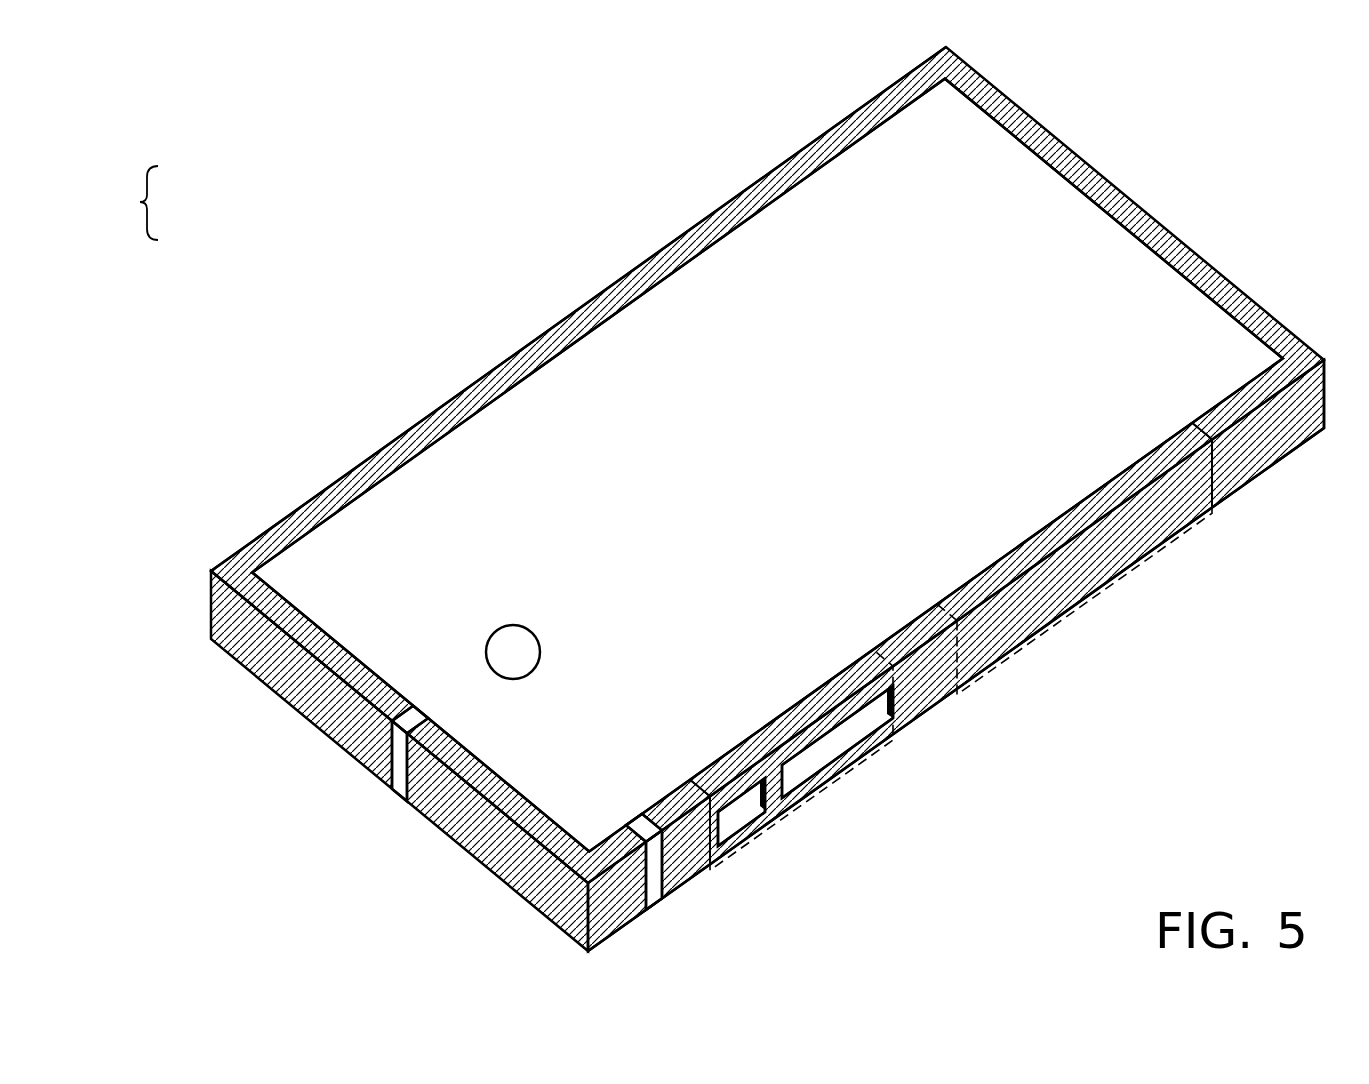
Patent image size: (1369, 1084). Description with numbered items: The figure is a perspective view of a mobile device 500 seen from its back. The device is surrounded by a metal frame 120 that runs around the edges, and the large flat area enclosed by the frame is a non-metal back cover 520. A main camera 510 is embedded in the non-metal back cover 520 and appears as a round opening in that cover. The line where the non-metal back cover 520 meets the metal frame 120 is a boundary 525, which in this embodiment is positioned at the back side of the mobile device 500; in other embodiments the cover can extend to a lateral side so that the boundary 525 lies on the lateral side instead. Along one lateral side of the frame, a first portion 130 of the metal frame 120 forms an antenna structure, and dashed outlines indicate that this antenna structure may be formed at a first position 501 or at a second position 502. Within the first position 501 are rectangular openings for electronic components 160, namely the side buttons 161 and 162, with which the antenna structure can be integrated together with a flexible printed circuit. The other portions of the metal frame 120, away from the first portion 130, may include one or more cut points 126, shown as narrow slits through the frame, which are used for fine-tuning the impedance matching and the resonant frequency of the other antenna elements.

The mobile device 500 is at (133, 105).
The metal frame 120 is at (770, 172).
The cut points 126 is at (398, 762).
The first portion 130 is at (783, 788).
The electronic components 160 is at (153, 203).
The side button 161 is at (748, 805).
The side button 162 is at (855, 730).
The first position 501 is at (862, 767).
The second position 502 is at (1135, 565).
The main camera 510 is at (508, 648).
The non-metal back cover 520 is at (682, 367).
The boundary 525 is at (397, 463).